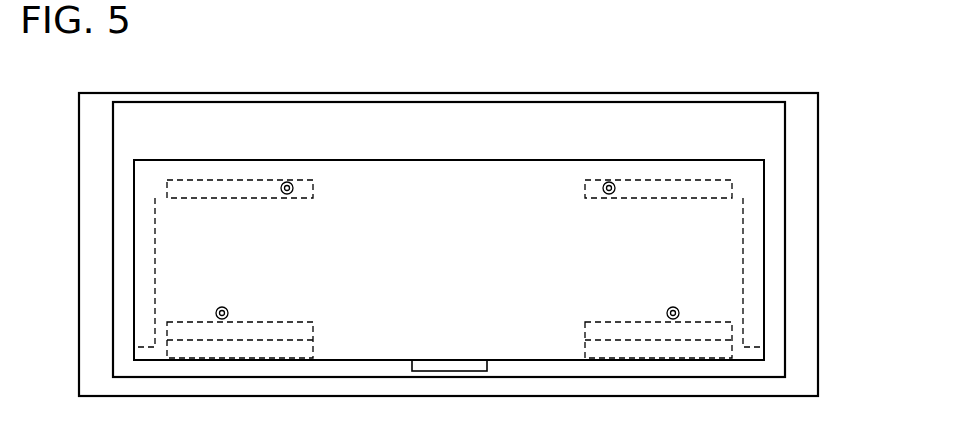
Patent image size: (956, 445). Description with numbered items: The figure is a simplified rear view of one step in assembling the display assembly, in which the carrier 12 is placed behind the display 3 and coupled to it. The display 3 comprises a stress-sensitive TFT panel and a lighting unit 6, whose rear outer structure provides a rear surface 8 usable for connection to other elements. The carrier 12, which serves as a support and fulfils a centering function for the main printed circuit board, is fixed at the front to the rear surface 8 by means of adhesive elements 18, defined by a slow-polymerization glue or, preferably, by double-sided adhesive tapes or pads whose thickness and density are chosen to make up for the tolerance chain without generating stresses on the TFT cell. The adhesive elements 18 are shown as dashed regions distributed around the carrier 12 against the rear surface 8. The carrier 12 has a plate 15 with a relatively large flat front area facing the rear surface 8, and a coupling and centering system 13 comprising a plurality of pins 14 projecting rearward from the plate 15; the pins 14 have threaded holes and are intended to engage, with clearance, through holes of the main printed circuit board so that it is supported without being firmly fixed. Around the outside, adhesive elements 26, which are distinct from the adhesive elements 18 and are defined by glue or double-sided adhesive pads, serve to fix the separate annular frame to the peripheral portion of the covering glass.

The display 3 is at (790, 120).
The lighting unit 6 is at (763, 140).
The rear surface 8 is at (705, 130).
The carrier 12 is at (712, 177).
The coupling and centering system 13 is at (622, 175).
The pins 14 is at (282, 195).
The plate 15 is at (705, 287).
The adhesive elements 18 is at (196, 192).
The adhesive elements 26 is at (810, 177).